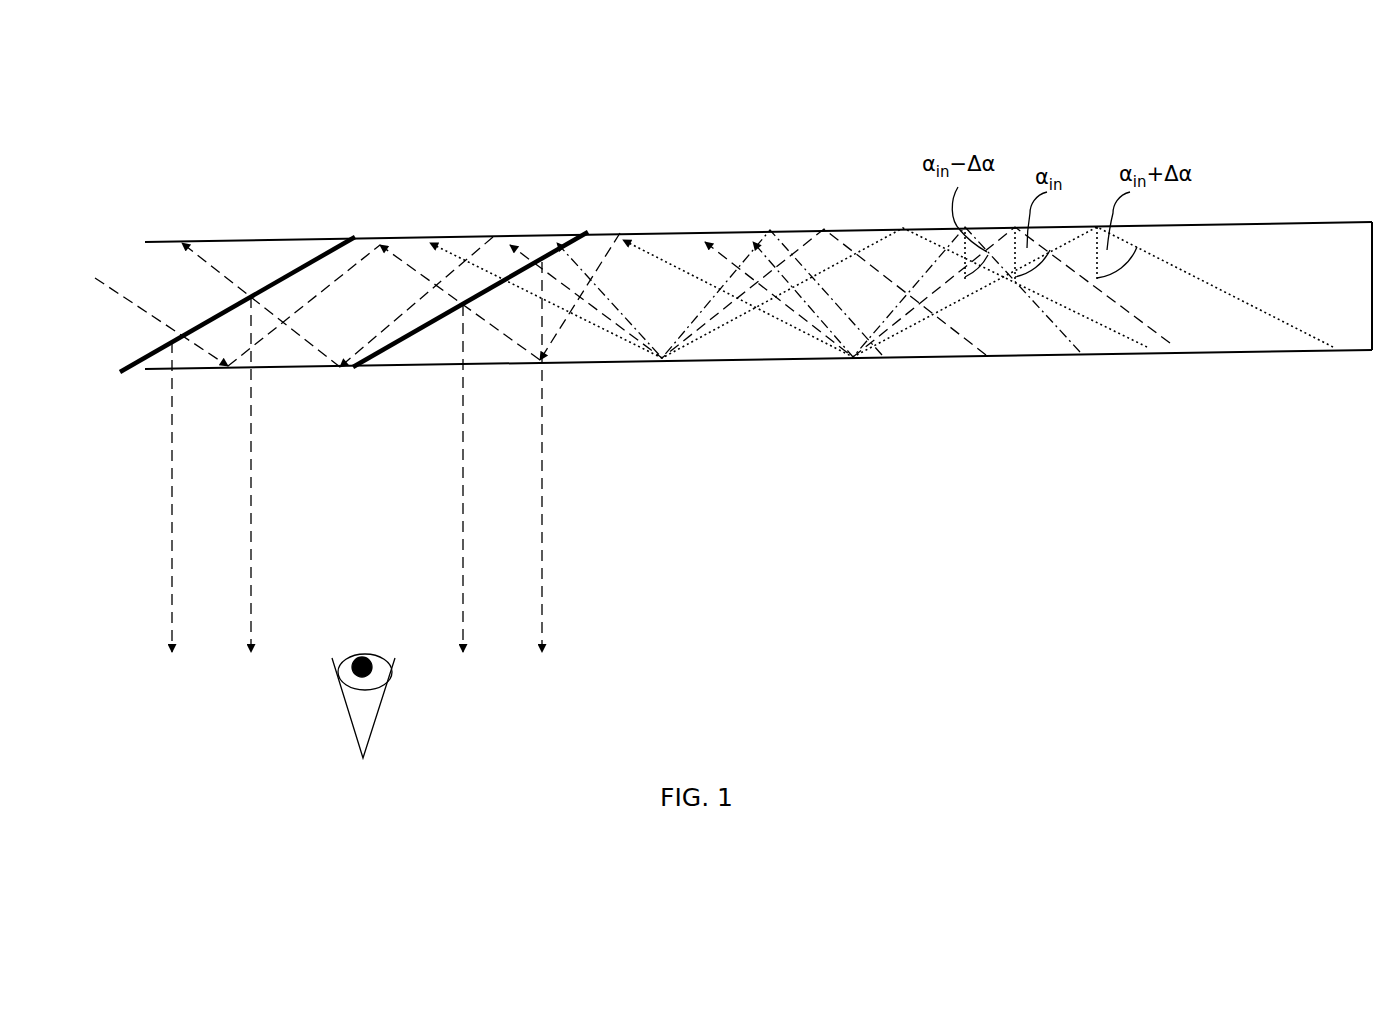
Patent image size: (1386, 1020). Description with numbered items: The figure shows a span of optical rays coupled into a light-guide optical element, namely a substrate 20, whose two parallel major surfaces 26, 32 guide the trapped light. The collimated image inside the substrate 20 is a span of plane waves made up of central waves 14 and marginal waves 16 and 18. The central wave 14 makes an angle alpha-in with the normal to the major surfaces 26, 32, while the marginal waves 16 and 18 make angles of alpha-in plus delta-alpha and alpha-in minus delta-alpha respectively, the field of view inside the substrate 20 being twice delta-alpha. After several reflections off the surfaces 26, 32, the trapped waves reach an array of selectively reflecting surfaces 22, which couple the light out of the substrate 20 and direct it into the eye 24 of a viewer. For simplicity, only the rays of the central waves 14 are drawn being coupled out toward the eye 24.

The central waves 14 is at (978, 355).
The marginal waves 16 is at (1292, 325).
The marginal waves 18 is at (1052, 317).
The substrate 20 is at (733, 340).
The selectively reflecting surfaces 22 is at (267, 286).
The eye 24 is at (380, 705).
The major surface 26 is at (602, 362).
The major surface 32 is at (723, 231).